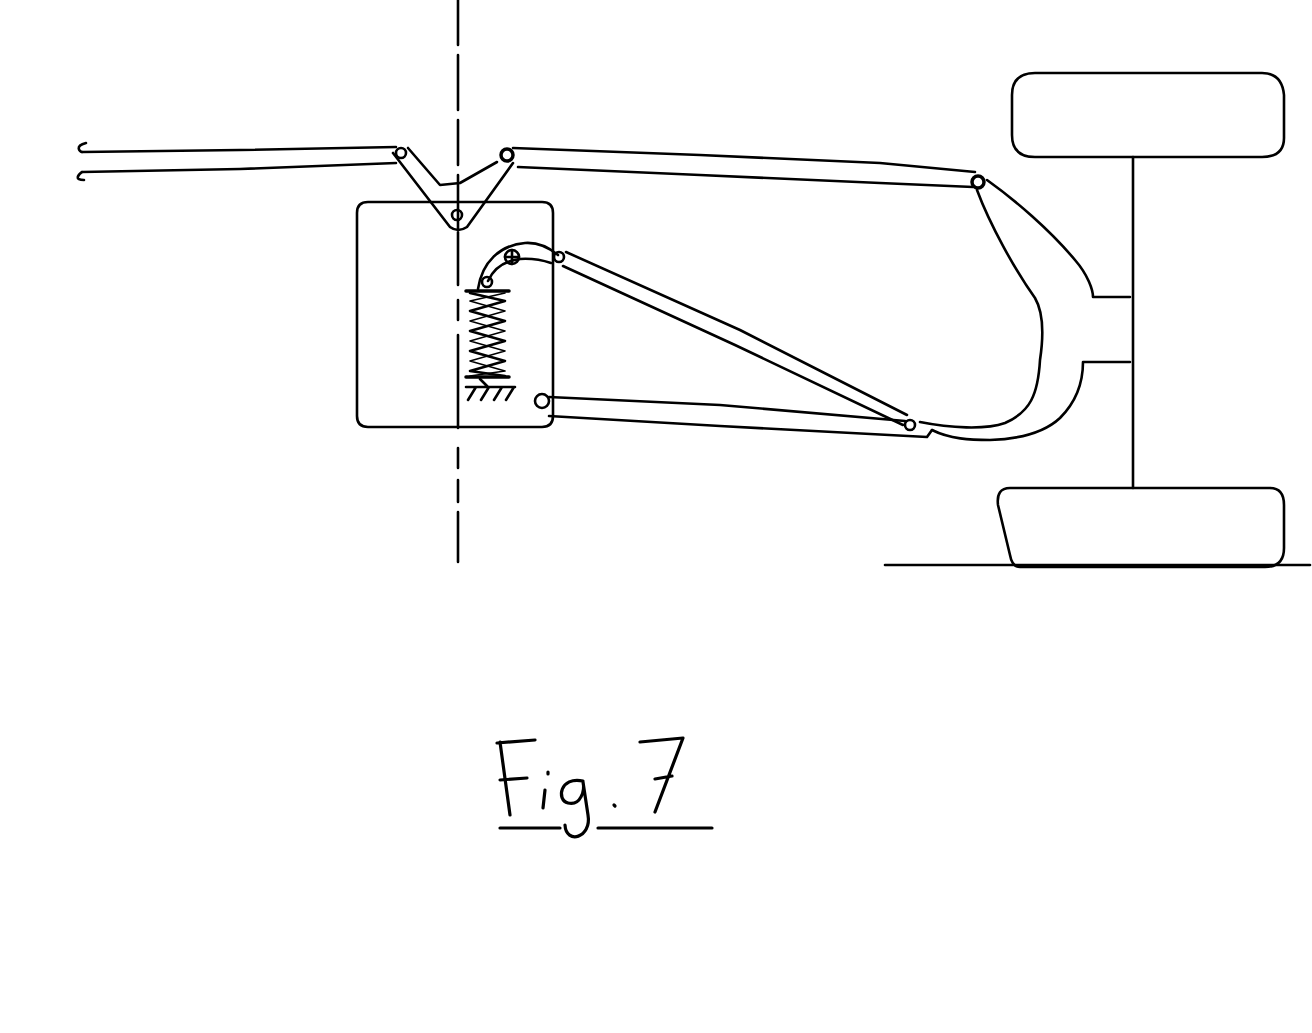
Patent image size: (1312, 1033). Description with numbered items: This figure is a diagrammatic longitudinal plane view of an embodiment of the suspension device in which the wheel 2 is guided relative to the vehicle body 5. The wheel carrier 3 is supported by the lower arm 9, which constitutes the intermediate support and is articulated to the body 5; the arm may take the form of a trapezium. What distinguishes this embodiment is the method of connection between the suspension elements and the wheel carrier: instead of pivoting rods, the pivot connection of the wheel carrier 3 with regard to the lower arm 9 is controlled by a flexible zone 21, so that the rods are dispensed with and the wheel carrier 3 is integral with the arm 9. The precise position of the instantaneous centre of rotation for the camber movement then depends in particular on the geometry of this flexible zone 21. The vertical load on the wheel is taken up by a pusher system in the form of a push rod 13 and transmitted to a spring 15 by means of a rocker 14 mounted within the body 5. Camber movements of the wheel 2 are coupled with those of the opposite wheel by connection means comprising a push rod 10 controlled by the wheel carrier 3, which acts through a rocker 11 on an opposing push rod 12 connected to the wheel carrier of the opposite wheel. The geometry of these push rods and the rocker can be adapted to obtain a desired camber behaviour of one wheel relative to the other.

The wheel 2 is at (1133, 258).
The wheel carrier 3 is at (1033, 248).
The body 5 is at (375, 352).
The lower arm 9 is at (655, 413).
The push rod 10 is at (725, 165).
The rocker 11 is at (480, 157).
The opposing push rod 12 is at (230, 163).
The push rod 13 is at (737, 340).
The rocker 14 is at (577, 221).
The spring 15 is at (513, 337).
The flexible zone 21 is at (950, 477).